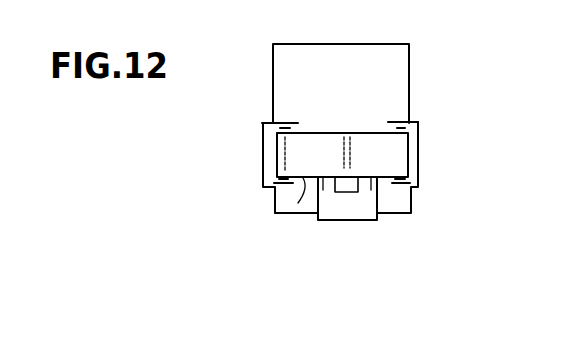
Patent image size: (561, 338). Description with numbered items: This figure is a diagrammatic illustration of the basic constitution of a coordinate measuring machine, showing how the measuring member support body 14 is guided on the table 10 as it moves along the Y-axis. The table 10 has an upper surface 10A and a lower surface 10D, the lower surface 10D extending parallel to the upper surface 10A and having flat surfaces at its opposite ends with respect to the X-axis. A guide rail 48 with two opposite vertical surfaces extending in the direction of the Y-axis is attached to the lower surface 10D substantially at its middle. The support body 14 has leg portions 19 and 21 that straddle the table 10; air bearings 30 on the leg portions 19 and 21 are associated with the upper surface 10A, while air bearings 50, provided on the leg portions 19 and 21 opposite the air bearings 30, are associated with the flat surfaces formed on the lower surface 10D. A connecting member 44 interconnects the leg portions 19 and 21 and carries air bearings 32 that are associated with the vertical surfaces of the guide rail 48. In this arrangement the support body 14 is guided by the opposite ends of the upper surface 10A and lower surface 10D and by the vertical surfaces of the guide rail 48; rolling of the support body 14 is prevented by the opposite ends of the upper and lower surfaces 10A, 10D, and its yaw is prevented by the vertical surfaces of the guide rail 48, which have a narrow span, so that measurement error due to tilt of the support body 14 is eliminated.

The measuring member support body 14 is at (343, 44).
The table 10 is at (350, 133).
The upper surface 10A is at (318, 133).
The lower surface 10D is at (278, 214).
The leg portion 19 is at (263, 152).
The leg portion 21 is at (418, 162).
The air bearings 30 is at (275, 122).
The air bearings 32 is at (320, 170).
The connecting member 44 is at (368, 221).
The guide rail 48 is at (346, 193).
The air bearings 50 is at (283, 186).